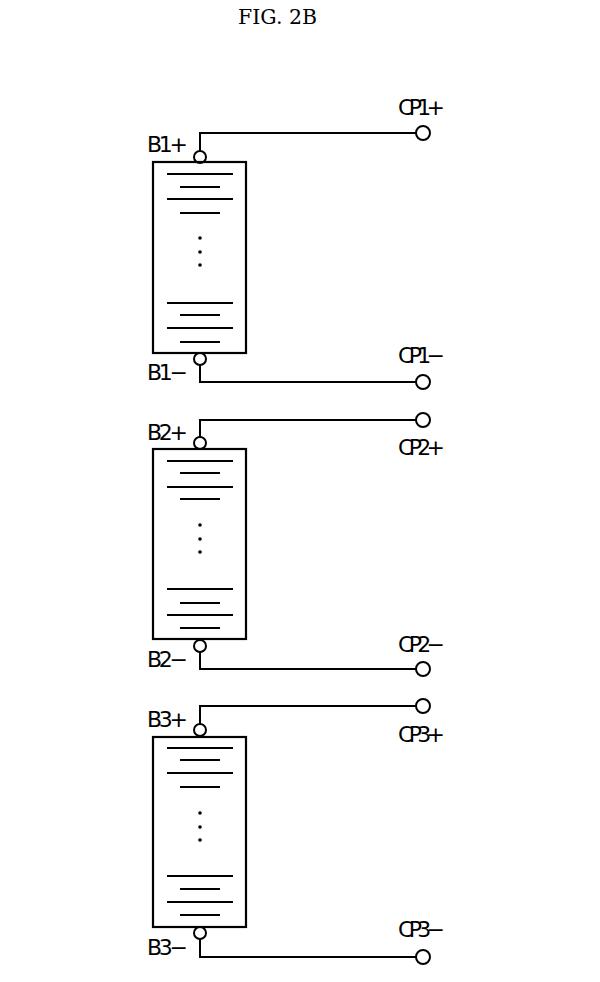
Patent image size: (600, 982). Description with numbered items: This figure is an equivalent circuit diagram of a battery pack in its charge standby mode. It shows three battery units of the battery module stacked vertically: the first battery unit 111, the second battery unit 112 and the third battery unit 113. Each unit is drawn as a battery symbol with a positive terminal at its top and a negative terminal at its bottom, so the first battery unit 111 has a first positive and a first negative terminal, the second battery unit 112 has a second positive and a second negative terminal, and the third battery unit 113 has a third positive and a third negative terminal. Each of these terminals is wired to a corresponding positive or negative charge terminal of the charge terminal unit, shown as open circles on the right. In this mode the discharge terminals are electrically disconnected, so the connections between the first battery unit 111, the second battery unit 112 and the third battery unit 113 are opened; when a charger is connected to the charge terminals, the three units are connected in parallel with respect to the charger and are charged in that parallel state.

The first battery unit 111 is at (153, 252).
The second battery unit 112 is at (153, 547).
The third battery unit 113 is at (153, 827).